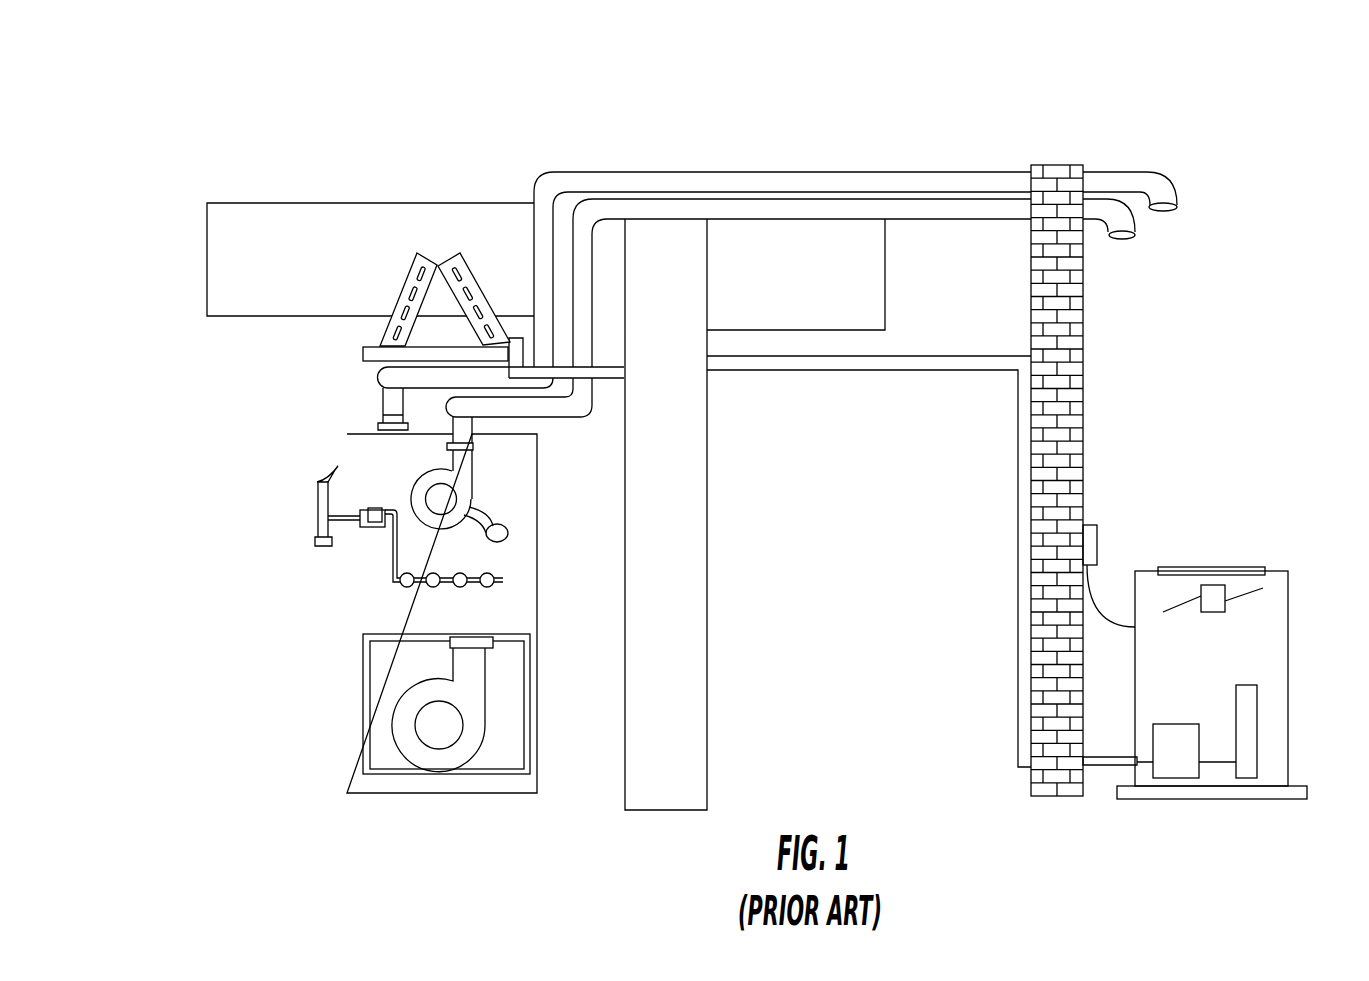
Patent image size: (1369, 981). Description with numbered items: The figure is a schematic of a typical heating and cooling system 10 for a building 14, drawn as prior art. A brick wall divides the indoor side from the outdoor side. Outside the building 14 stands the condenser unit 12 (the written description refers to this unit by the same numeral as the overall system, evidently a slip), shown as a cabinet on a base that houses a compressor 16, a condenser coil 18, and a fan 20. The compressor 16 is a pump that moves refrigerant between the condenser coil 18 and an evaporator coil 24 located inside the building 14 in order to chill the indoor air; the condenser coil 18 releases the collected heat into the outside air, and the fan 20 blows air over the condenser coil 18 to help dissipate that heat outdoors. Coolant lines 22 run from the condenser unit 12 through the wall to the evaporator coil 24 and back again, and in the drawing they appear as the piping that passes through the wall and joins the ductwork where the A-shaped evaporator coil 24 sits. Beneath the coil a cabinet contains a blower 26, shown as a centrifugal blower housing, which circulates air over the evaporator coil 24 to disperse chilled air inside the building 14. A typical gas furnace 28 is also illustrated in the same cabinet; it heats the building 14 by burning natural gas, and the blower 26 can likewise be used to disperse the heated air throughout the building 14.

The heating and cooling system 10 is at (692, 491).
The control box 12 is at (1206, 655).
The building 14 is at (1073, 420).
The compressor 16 is at (1168, 734).
The condenser coil 18 is at (1247, 692).
The fan 20 is at (1213, 590).
The coolant lines 22 is at (1017, 713).
The evaporator coil 24 is at (402, 268).
The blower 26 is at (414, 722).
The gas furnace 28 is at (370, 579).